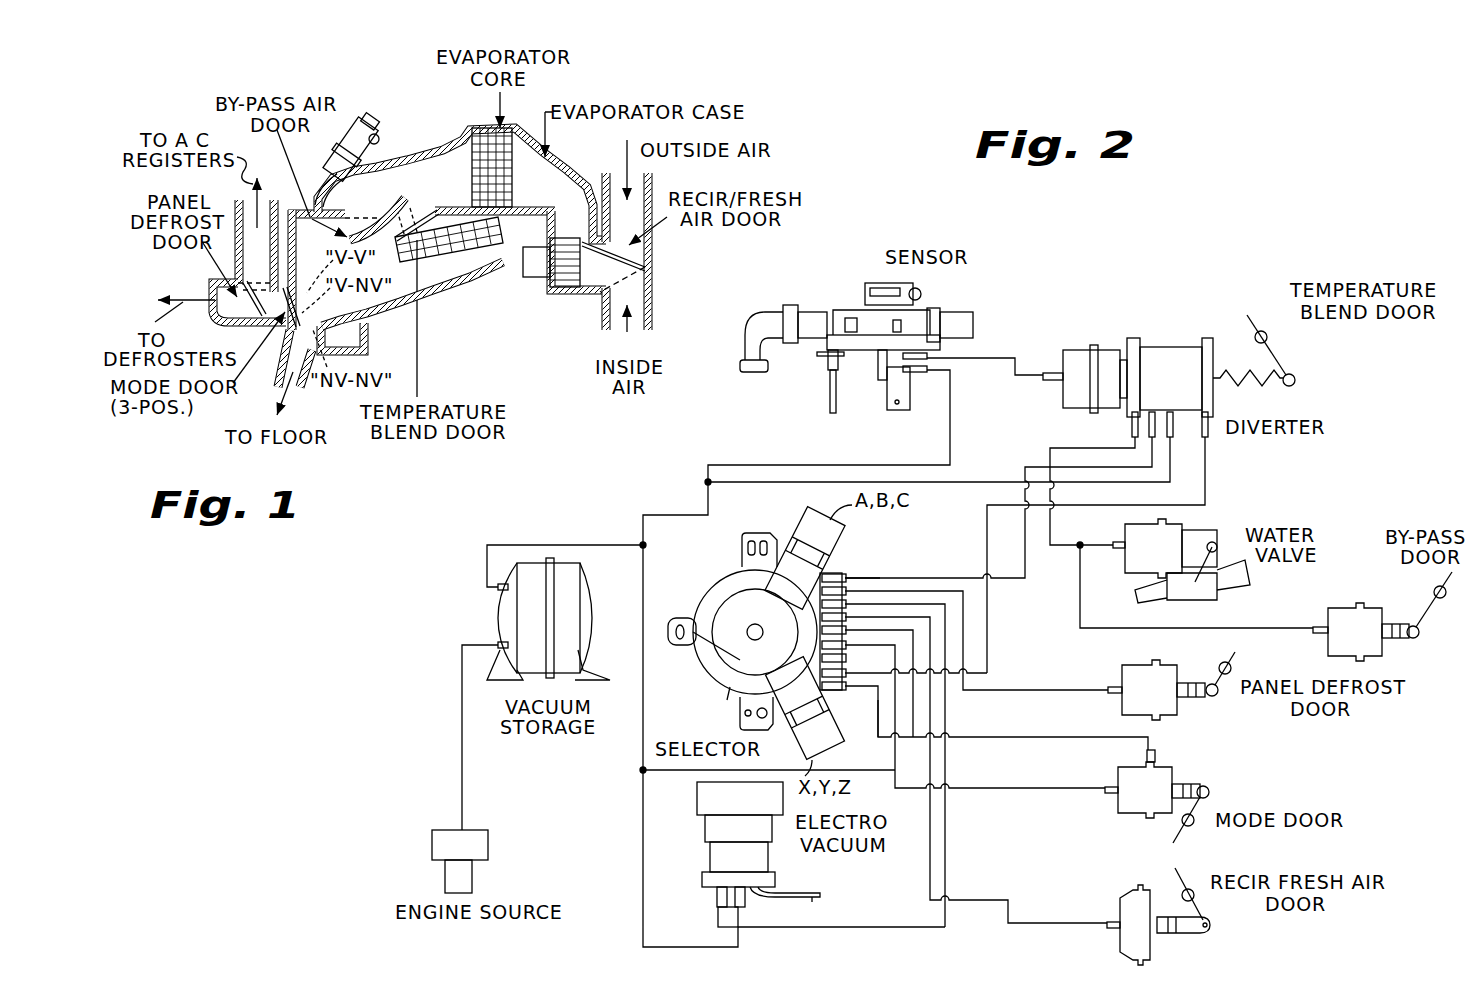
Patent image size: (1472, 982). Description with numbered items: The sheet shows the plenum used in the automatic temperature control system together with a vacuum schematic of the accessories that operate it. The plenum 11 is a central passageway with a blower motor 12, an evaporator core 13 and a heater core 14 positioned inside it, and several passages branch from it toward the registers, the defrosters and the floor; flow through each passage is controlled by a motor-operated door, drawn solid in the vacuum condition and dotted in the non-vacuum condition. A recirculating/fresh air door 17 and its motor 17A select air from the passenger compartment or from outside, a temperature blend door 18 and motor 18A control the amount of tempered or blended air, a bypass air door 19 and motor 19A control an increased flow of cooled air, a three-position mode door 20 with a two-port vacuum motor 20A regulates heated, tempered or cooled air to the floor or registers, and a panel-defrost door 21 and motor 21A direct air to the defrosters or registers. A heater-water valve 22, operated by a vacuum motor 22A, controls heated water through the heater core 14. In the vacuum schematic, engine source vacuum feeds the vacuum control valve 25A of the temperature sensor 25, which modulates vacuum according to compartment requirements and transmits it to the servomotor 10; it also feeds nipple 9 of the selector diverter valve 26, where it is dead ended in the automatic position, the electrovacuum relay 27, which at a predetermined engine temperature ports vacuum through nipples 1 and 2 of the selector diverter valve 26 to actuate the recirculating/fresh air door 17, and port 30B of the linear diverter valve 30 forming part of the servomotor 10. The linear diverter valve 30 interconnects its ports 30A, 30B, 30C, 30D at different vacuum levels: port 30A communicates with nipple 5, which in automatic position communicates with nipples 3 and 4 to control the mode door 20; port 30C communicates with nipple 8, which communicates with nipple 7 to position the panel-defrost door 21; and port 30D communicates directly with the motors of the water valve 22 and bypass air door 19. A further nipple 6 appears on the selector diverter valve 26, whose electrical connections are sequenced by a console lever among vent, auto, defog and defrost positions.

In FIG. 2, the nipple 1 is at (933, 648).
In FIG. 2, the nipple 2 is at (948, 628).
In FIG. 2, the nipple 3 is at (878, 727).
In FIG. 2, the nipple 4 is at (878, 707).
In FIG. 2, the nipple 5 is at (987, 675).
In FIG. 2, the vacuum line 6 is at (847, 658).
In FIG. 2, the nipple 7 is at (968, 612).
In FIG. 2, the nipple 8 is at (940, 578).
In FIG. 2, the nipple 9 is at (850, 630).
In FIG. 2, the servomotor 10 is at (1162, 345).
In FIG. 1, the plenum 11 is at (370, 316).
In FIG. 1, the blower motor 12 is at (564, 284).
In FIG. 1, the evaporator core 13 is at (470, 128).
In FIG. 1, the heater core 14 is at (450, 259).
In FIG. 1, the recirculating/fresh air door 17 is at (643, 262).
In FIG. 2, the recirculating/fresh air door 17 is at (1175, 876).
In FIG. 2, the motor 17A is at (1150, 945).
In FIG. 1, the temperature blend door 18 is at (418, 237).
In FIG. 2, the temperature blend door 18 is at (1266, 352).
In FIG. 2, the motor 18A is at (1068, 350).
In FIG. 1, the bypass air door 19 is at (353, 212).
In FIG. 2, the bypass air door 19 is at (1438, 605).
In FIG. 2, the motor 19A is at (1346, 608).
In FIG. 1, the three-position mode door 20 is at (300, 290).
In FIG. 2, the three-position mode door 20 is at (1180, 840).
In FIG. 2, the two-port vacuum motor 20A is at (1172, 768).
In FIG. 1, the panel-defrost door 21 is at (280, 326).
In FIG. 2, the panel-defrost door 21 is at (1235, 652).
In FIG. 2, the motor 21A is at (1172, 715).
In FIG. 1, the heater-water valve 22 is at (373, 137).
In FIG. 2, the heater-water valve 22 is at (1247, 583).
In FIG. 2, the vacuum motor 22A is at (1140, 527).
In FIG. 2, the temperature sensor 25 is at (940, 317).
In FIG. 2, the vacuum control valve 25A is at (880, 378).
In FIG. 2, the selector diverter valve 26 is at (830, 572).
In FIG. 2, the electrovacuum relay 27 is at (710, 850).
In FIG. 2, the linear diverter valve 30 is at (1210, 396).
In FIG. 2, the port 30A is at (1205, 500).
In FIG. 2, the port 30B is at (1180, 470).
In FIG. 2, the port 30C is at (1152, 455).
In FIG. 2, the port 30D is at (1135, 442).